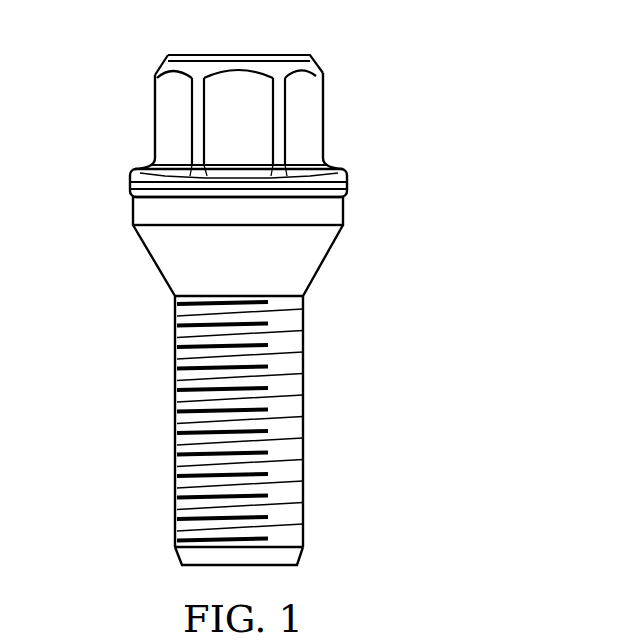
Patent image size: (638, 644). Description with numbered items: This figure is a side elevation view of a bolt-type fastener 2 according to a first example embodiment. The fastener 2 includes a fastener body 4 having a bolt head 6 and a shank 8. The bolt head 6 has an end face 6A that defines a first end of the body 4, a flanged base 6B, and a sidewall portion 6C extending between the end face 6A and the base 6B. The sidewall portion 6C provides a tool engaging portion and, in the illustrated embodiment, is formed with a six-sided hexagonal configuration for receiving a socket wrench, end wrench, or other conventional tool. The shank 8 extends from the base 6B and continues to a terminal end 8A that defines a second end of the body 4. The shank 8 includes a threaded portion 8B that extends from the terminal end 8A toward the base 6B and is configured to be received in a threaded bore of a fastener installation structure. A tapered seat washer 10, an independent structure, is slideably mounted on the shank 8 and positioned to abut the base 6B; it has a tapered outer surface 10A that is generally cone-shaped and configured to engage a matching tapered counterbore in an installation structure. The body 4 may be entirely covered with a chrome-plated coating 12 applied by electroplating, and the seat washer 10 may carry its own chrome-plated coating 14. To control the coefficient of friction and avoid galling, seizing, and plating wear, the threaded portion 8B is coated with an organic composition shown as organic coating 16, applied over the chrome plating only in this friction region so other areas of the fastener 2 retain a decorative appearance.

The bolt-type fastener 2 is at (123, 51).
The fastener body 4 is at (458, 50).
The bolt head 6 is at (90, 52).
The end face 6A is at (297, 55).
The flanged base 6B is at (343, 197).
The sidewall portion 6C is at (307, 104).
The shank 8 is at (87, 197).
The terminal end 8A is at (267, 565).
The threaded portion 8B is at (345, 293).
The tapered seat washer 10 is at (412, 197).
The tapered outer surface 10A is at (352, 223).
The chrome-plated coating 12 is at (155, 112).
The chrome-plated coating 14 is at (152, 257).
The organic coating 16 is at (175, 402).